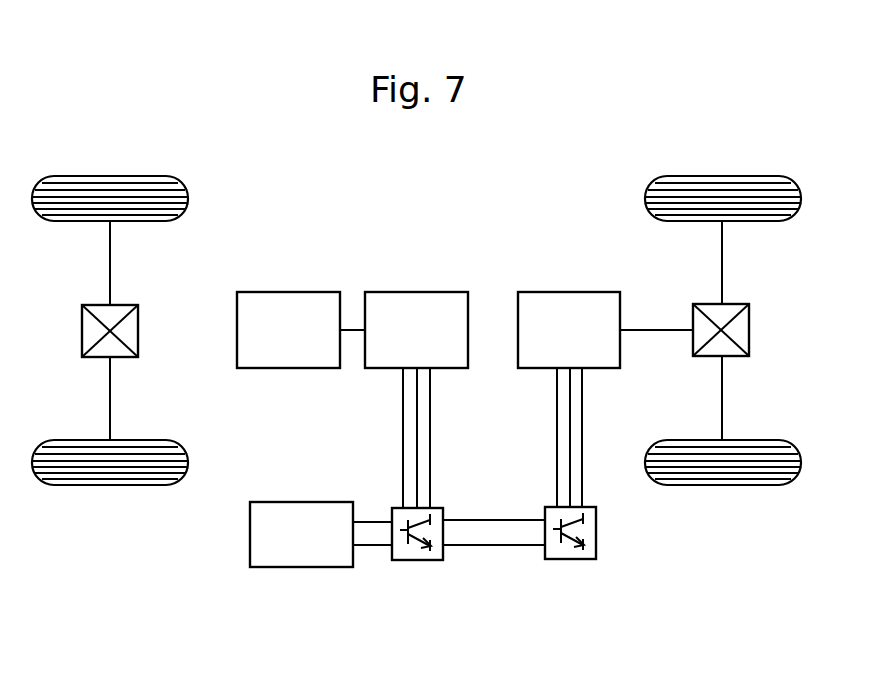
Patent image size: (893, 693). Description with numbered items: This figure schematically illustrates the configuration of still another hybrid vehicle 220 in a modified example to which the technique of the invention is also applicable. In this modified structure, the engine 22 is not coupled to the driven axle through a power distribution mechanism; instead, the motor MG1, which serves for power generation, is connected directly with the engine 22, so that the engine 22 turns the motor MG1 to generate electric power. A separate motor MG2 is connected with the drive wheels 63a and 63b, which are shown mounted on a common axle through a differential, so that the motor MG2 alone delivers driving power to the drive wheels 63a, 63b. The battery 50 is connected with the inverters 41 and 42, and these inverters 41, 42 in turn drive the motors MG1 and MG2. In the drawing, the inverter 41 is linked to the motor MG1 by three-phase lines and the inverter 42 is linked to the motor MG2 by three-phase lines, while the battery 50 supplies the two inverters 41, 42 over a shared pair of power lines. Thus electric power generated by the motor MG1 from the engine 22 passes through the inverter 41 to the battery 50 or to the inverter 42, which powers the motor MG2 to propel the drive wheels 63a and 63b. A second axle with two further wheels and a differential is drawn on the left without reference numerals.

The hybrid vehicle 220 is at (451, 157).
The engine 22 is at (290, 291).
The motor MG1 is at (418, 291).
The motor MG2 is at (571, 291).
The drive wheel 63a is at (722, 176).
The drive wheel 63b is at (722, 485).
The battery 50 is at (303, 568).
The inverter 41 is at (417, 561).
The inverter 42 is at (571, 560).